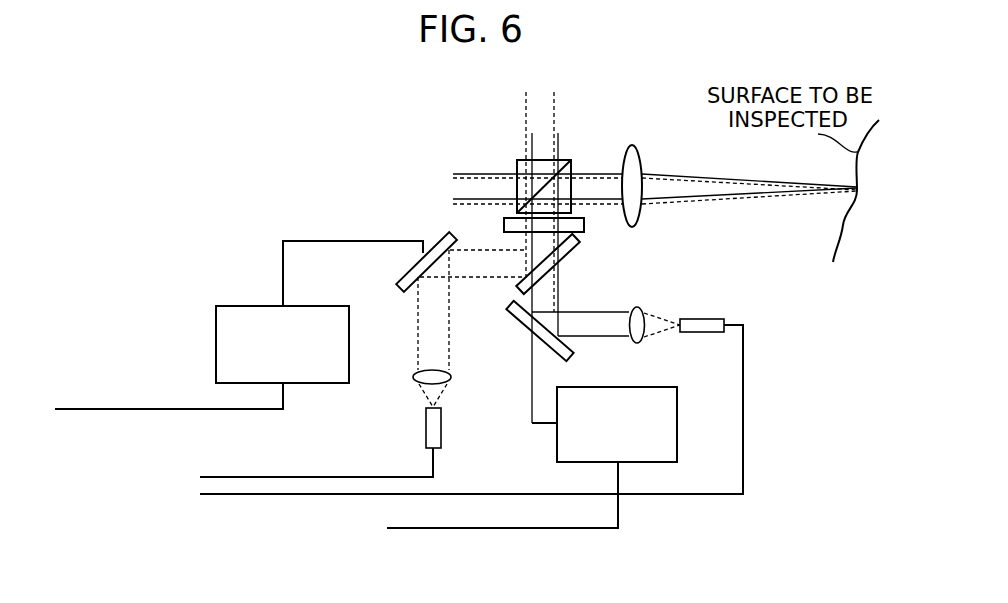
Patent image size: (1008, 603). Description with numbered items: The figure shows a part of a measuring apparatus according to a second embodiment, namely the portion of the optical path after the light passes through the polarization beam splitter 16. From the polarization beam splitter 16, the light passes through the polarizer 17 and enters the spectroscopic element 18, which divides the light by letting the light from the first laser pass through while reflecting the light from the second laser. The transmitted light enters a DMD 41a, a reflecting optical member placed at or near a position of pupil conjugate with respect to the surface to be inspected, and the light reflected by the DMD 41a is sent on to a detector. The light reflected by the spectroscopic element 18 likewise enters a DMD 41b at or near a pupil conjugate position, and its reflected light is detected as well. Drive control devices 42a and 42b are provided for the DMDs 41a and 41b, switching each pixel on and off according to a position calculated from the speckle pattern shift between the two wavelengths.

The polarization beam splitter 16 is at (520, 167).
The polarizer 17 is at (504, 226).
The spectroscopic element 18 is at (577, 247).
The DMD (reflecting optical member) 41a is at (526, 318).
The DMD 41b is at (410, 268).
The drive control device 42a is at (648, 390).
The drive control device 42b is at (248, 312).